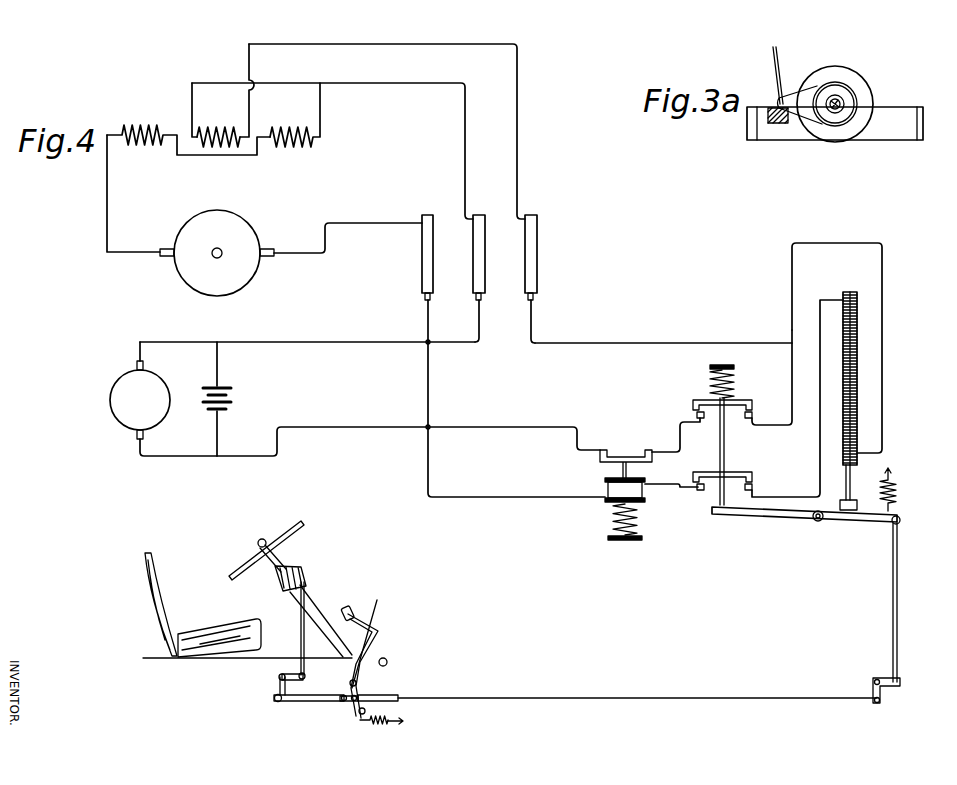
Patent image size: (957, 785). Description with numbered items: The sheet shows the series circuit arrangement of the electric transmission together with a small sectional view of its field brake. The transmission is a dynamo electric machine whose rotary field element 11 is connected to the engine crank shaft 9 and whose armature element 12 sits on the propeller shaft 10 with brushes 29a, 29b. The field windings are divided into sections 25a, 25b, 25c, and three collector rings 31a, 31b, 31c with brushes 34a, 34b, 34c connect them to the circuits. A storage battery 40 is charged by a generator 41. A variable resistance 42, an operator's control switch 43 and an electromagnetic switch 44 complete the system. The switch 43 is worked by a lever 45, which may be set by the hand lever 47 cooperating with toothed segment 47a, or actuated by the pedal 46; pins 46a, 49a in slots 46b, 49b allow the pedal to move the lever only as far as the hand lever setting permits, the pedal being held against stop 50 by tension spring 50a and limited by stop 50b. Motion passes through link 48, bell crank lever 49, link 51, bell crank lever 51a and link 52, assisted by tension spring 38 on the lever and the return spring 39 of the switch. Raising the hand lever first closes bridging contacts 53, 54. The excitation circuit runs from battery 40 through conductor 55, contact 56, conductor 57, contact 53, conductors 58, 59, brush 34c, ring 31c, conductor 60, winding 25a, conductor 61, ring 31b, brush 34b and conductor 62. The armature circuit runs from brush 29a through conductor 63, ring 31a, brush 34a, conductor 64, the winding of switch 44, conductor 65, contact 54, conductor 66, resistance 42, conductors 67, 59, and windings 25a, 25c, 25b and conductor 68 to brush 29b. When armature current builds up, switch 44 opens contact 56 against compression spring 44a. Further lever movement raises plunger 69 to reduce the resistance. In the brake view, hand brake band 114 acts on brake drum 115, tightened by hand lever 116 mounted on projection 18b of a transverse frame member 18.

In FIG. 3A, the engine shaft 9 is at (846, 103).
In FIG. 4, the propeller shaft 10 is at (238, 241).
In FIG. 4, the field element 11 is at (222, 77).
In FIG. 3A, the field element 11 is at (838, 68).
In FIG. 4, the armature element 12 is at (243, 226).
In FIG. 3A, the transverse member 18 is at (884, 117).
In FIG. 3A, the projection 18b is at (780, 125).
In FIG. 4, the field winding section 25a is at (218, 126).
In FIG. 4, the field winding section 25b is at (188, 129).
In FIG. 4, the field winding section 25c is at (295, 115).
In FIG. 4, the armature brush 29a is at (272, 257).
In FIG. 4, the armature brush 29b is at (163, 256).
In FIG. 4, the collector ring 31a is at (428, 214).
In FIG. 4, the collector ring 31b is at (481, 214).
In FIG. 4, the collector ring 31c is at (535, 216).
In FIG. 4, the brush 34a is at (425, 299).
In FIG. 4, the brush 34b is at (481, 300).
In FIG. 4, the brush 34c is at (540, 300).
In FIG. 4, the tension spring 38 is at (902, 490).
In FIG. 4, the return spring 39 is at (736, 378).
In FIG. 4, the storage battery 40 is at (236, 404).
In FIG. 4, the generator 41 is at (106, 394).
In FIG. 4, the variable resistance 42 is at (858, 335).
In FIG. 4, the control switch 43 is at (686, 408).
In FIG. 4, the electromagnetic switch 44 is at (607, 501).
In FIG. 4, the compression spring 44a is at (638, 522).
In FIG. 4, the lever 45 is at (790, 518).
In FIG. 4, the pedal 46 is at (362, 686).
In FIG. 4, the pin 46a is at (360, 697).
In FIG. 4, the slot 46b is at (350, 703).
In FIG. 4, the hand lever 47 is at (312, 578).
In FIG. 4, the toothed segment 47a is at (300, 562).
In FIG. 4, the link 48 is at (296, 633).
In FIG. 4, the bell crank lever 49 is at (279, 678).
In FIG. 4, the pin 49a is at (276, 701).
In FIG. 4, the slot 49b is at (290, 703).
In FIG. 4, the stop 50 is at (361, 722).
In FIG. 4, the tension spring 50a is at (396, 722).
In FIG. 4, the stop 50b is at (389, 662).
In FIG. 4, the link 51 is at (535, 697).
In FIG. 4, the bell crank lever 51a is at (874, 680).
In FIG. 4, the link 52 is at (892, 597).
In FIG. 4, the bridging contact 53 is at (748, 408).
In FIG. 4, the bridging contact 54 is at (742, 473).
In FIG. 4, the conductor 55 is at (342, 427).
In FIG. 4, the bridging contact 56 is at (620, 455).
In FIG. 4, the conductor 57 is at (686, 441).
In FIG. 4, the conductor 58 is at (793, 376).
In FIG. 4, the conductor 59 is at (620, 344).
In FIG. 4, the conductor 60 is at (522, 45).
In FIG. 4, the conductor 61 is at (432, 85).
In FIG. 4, the conductor 62 is at (322, 343).
In FIG. 4, the conductor 63 is at (352, 226).
In FIG. 4, the conductor 64 is at (436, 385).
In FIG. 4, the conductor 65 is at (667, 487).
In FIG. 4, the conductor 66 is at (815, 463).
In FIG. 4, the conductor 67 is at (826, 243).
In FIG. 4, the conductor 68 is at (108, 198).
In FIG. 4, the plunger 69 is at (851, 481).
In FIG. 3A, the hand brake 114 is at (786, 92).
In FIG. 3A, the brake drum 115 is at (850, 97).
In FIG. 3A, the hand lever 116 is at (772, 46).